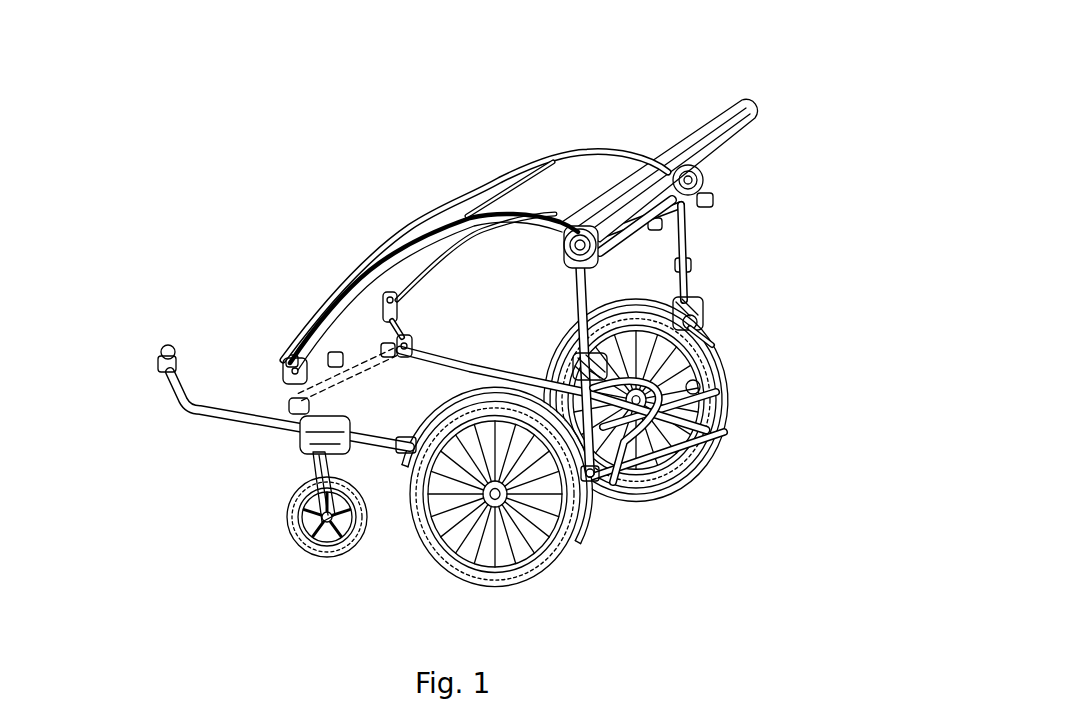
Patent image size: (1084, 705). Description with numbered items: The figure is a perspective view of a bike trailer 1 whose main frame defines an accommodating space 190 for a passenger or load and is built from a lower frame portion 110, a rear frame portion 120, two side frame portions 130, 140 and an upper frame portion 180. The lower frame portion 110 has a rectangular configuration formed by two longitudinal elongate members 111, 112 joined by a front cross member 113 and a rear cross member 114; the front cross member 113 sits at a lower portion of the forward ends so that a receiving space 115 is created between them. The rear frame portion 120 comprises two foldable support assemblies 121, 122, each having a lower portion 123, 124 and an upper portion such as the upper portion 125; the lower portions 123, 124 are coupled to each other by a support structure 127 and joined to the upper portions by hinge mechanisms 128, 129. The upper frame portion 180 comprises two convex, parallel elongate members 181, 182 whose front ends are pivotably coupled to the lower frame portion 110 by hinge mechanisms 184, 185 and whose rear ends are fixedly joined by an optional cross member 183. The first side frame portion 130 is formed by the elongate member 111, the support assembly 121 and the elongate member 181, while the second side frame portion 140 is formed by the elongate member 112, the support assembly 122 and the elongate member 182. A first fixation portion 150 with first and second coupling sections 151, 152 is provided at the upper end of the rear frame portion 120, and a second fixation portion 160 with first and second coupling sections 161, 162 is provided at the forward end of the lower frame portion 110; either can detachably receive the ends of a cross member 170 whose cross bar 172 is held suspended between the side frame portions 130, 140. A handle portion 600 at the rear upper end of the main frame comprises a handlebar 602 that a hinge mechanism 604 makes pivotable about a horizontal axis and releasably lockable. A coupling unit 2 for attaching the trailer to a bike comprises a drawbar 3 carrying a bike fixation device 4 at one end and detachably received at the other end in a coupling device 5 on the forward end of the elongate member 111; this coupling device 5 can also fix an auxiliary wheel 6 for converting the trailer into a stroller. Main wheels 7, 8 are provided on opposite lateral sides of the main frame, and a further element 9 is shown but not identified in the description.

The bike trailer 1 is at (505, 332).
The coupling unit 2 is at (237, 418).
The drawbar 3 is at (183, 404).
The bike fixation device 4 is at (155, 362).
The coupling device 5 is at (288, 458).
The auxiliary wheel 6 is at (320, 555).
The main wheel 7 is at (458, 487).
The main wheel 8 is at (567, 578).
The rear fender 9 is at (657, 518).
The lower frame portion 110 is at (388, 464).
The elongate member 111 is at (377, 442).
The elongate member 112 is at (483, 375).
The front cross member 113 is at (297, 415).
The rear cross member 114 is at (657, 477).
The receiving space 115 is at (347, 357).
The rear frame portion 120 is at (708, 263).
The support assembly 121 is at (615, 357).
The support assembly 122 is at (780, 345).
The lower portion 123 is at (643, 450).
The lower portion 124 is at (720, 390).
The upper portion 125 is at (565, 300).
The support structure 127 is at (620, 407).
The hinge mechanism 128 is at (577, 387).
The hinge mechanism 129 is at (710, 308).
The first side frame portion 130 is at (395, 245).
The second side frame portion 140 is at (503, 172).
The first fixation portion 150 is at (540, 326).
The first coupling section 151 is at (622, 356).
The second coupling section 152 is at (690, 218).
The second fixation portion 160 is at (413, 333).
The first coupling section 161 is at (303, 413).
The second coupling section 162 is at (388, 347).
The cross member 170 is at (343, 372).
The cross bar 172 is at (658, 228).
The upper frame portion 180 is at (390, 269).
The elongate member 181 is at (413, 240).
The elongate member 182 is at (553, 167).
The cross member 183 is at (600, 217).
The hinge mechanism 184 is at (273, 380).
The hinge mechanism 185 is at (388, 293).
The accommodating space 190 is at (580, 198).
The handle portion 600 is at (783, 97).
The handlebar 602 is at (700, 143).
The hinge mechanism 604 is at (702, 196).